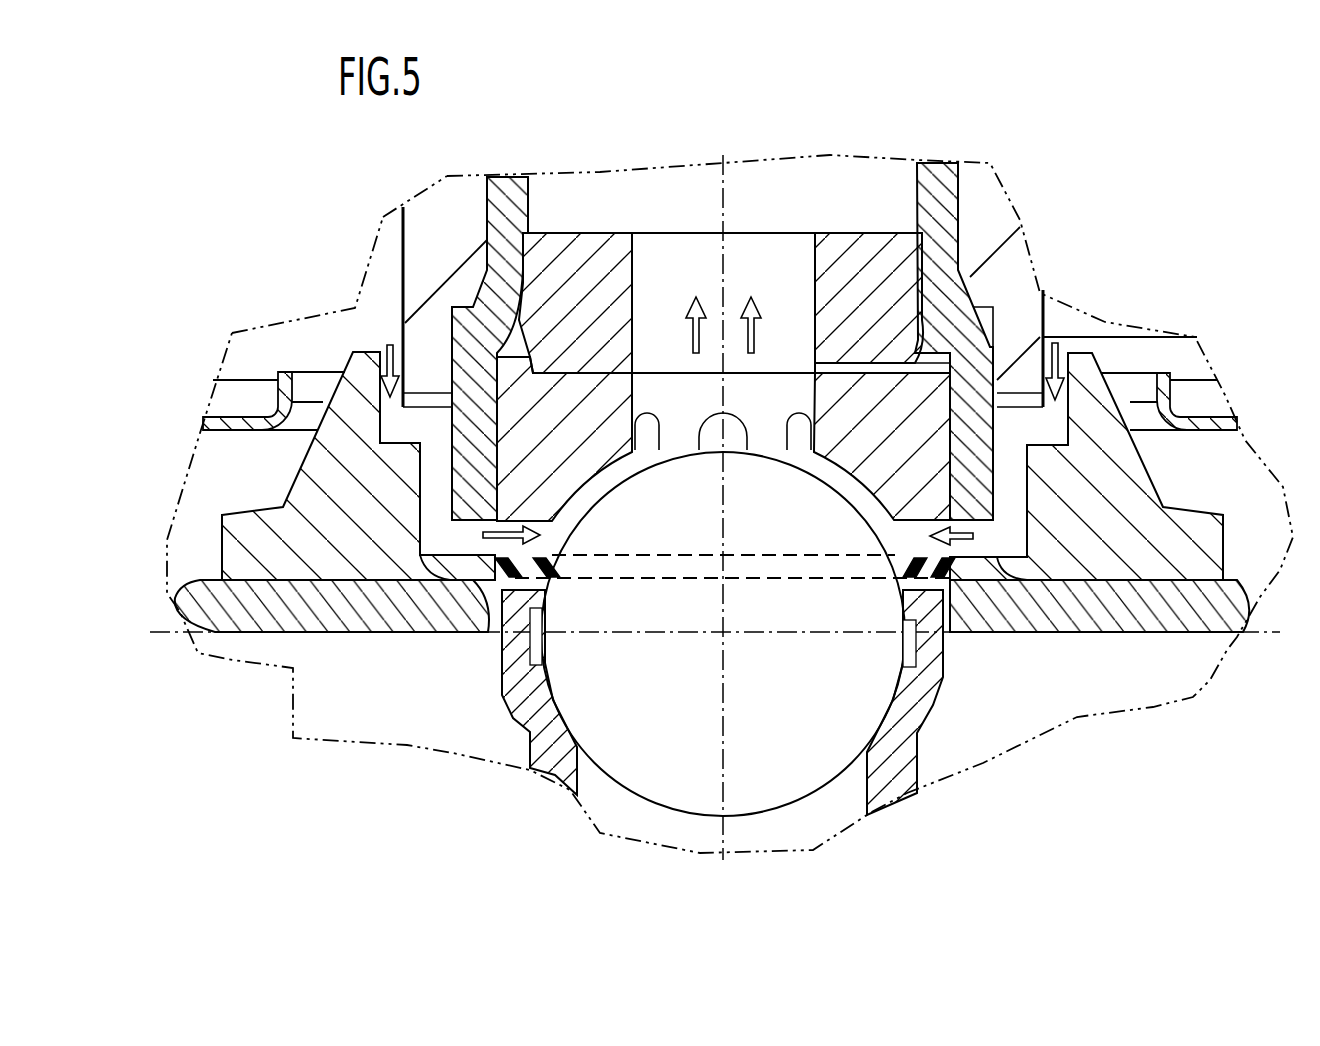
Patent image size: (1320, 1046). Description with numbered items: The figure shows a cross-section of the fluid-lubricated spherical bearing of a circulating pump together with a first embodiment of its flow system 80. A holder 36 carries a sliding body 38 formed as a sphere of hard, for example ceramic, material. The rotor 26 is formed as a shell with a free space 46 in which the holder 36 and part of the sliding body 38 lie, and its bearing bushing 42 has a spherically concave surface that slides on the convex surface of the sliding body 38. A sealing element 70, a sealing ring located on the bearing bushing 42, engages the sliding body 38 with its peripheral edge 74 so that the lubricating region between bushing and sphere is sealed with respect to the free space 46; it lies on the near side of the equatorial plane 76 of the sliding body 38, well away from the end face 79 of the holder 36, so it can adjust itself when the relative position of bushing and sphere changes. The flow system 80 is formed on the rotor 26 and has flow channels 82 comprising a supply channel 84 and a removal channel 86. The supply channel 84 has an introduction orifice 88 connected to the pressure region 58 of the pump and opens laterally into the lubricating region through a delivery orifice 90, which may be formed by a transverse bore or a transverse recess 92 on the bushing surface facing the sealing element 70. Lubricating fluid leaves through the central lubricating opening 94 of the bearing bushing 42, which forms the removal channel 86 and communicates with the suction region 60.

The rotor 26 is at (220, 537).
The holder 36 is at (917, 707).
The sliding body 38 is at (645, 716).
The bearing bushing 42 is at (583, 417).
The free space 46 is at (467, 700).
The pressure region 58 is at (362, 297).
The suction region 60 is at (785, 190).
The sealing element 70 is at (895, 570).
The peripheral edge 74 is at (548, 552).
The equatorial plane 76 is at (783, 634).
The end face 79 is at (1020, 605).
The flow system 80 is at (360, 345).
The flow channels 82 is at (440, 475).
The supply channel 84 is at (473, 583).
The removal channel 86 is at (655, 285).
The introduction orifice 88 is at (397, 343).
The delivery orifice 90 is at (553, 535).
The transverse recess 92 is at (523, 547).
The central lubricating opening 94 is at (813, 400).